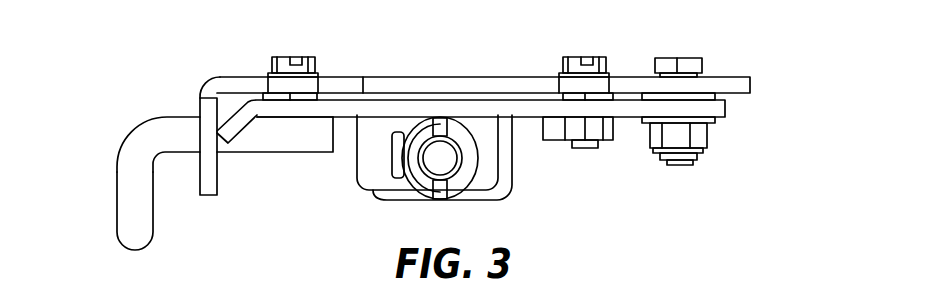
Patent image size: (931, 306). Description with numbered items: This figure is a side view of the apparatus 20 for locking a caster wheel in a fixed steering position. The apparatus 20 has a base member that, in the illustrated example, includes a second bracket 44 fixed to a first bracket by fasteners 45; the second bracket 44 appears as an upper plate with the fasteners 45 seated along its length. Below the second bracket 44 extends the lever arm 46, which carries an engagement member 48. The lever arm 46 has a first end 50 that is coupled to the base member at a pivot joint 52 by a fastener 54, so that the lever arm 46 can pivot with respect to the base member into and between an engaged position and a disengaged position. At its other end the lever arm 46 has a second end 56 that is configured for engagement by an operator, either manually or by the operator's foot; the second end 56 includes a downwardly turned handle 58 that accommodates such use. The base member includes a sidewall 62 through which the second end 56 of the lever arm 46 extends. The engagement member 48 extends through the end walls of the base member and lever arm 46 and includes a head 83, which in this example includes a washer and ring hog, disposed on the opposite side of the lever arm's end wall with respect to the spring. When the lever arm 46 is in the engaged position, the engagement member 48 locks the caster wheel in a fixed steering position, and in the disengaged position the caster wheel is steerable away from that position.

The apparatus 20 is at (623, 191).
The second bracket 44 is at (743, 87).
The fasteners 45 is at (270, 67).
The lever arm 46 is at (727, 108).
The engagement member 48 is at (430, 158).
The first end 50 is at (703, 107).
The pivot joint 52 is at (721, 136).
The fastener 54 is at (667, 63).
The second end 56 is at (185, 123).
The downwardly turned handle 58 is at (128, 202).
The sidewall 62 is at (210, 177).
The head 83 is at (452, 158).